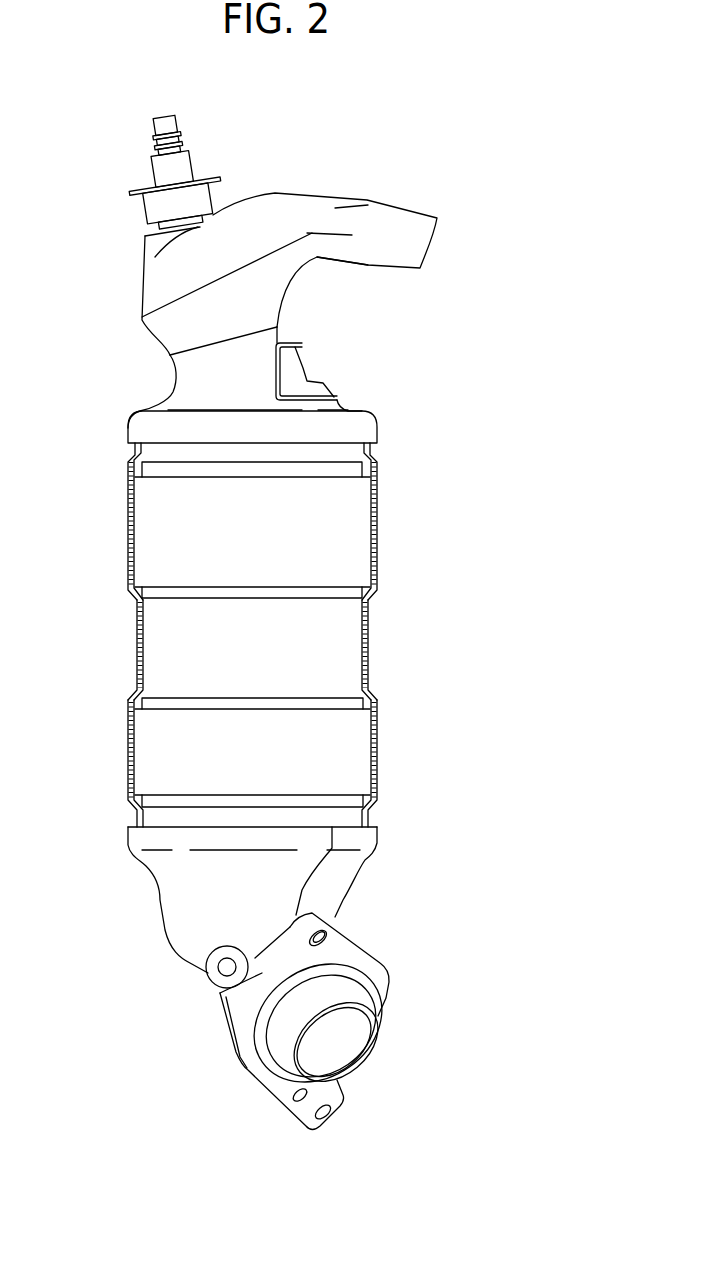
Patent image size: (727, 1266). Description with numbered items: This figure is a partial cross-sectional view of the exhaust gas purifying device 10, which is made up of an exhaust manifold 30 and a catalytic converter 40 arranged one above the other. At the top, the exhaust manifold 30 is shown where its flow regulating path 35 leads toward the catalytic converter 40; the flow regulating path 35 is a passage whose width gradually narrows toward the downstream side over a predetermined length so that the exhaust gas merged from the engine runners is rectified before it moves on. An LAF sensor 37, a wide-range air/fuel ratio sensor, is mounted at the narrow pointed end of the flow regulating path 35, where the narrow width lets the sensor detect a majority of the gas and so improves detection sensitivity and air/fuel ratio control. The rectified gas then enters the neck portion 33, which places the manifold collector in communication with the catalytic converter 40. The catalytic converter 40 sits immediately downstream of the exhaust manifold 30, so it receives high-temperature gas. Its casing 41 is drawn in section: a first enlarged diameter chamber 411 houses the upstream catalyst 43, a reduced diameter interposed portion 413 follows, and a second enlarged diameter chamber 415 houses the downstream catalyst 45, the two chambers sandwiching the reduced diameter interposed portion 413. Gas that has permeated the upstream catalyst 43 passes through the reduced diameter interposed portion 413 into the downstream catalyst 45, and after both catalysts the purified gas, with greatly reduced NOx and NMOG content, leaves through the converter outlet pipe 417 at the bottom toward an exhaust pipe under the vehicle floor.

The exhaust gas purifying device 10 is at (85, 157).
The exhaust manifold 30 is at (374, 104).
The neck portion 33 is at (200, 373).
The flow regulating path 35 is at (308, 192).
The LAF sensor 37 is at (218, 176).
The catalytic converter 40 is at (437, 477).
The casing 41 is at (463, 522).
The first enlarged diameter chamber 411 is at (376, 530).
The reduced diameter interposed portion 413 is at (368, 653).
The second enlarged diameter chamber 415 is at (376, 755).
The converter outlet pipe 417 is at (355, 880).
The upstream catalyst 43 is at (147, 530).
The downstream catalyst 45 is at (150, 753).